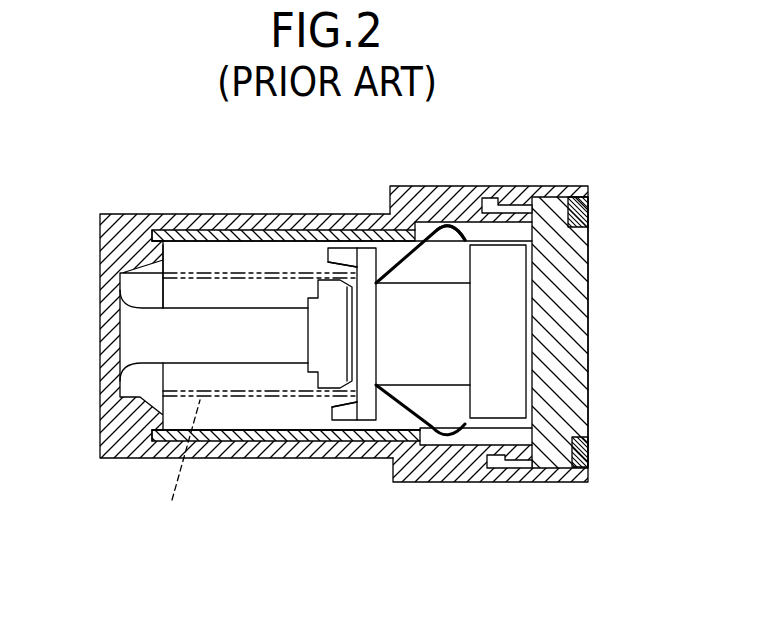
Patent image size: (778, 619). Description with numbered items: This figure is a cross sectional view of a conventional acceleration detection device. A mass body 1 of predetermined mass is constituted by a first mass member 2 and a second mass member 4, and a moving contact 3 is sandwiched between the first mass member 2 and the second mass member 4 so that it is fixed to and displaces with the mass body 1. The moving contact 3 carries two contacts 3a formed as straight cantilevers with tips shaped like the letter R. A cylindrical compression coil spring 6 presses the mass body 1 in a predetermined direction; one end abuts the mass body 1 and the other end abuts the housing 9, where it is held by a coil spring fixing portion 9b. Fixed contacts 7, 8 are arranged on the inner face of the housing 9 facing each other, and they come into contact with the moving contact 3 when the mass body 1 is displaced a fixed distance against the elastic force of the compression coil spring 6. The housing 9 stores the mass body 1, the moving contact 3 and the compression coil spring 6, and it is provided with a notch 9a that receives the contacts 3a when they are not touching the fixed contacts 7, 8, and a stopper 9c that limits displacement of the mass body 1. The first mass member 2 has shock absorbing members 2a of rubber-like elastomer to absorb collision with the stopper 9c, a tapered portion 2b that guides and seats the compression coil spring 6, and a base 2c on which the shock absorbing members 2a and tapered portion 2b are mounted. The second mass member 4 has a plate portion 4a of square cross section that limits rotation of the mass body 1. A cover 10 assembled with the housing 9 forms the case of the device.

The mass body 1 is at (380, 458).
The first mass member 2 is at (327, 212).
The shock absorbing members 2a is at (333, 355).
The tapered portion 2b is at (288, 447).
The base 2c is at (346, 458).
The moving contact 3 is at (397, 262).
The contacts 3a is at (437, 222).
The second mass member 4 is at (513, 370).
The plate portion 4a is at (505, 303).
The compression coil spring 6 is at (176, 464).
The fixed contact 7 is at (228, 238).
The fixed contact 8 is at (208, 447).
The housing 9 is at (115, 228).
The notch 9a is at (472, 228).
The coil spring fixing portion 9b is at (117, 376).
The stopper 9c is at (163, 247).
The cover 10 is at (576, 214).